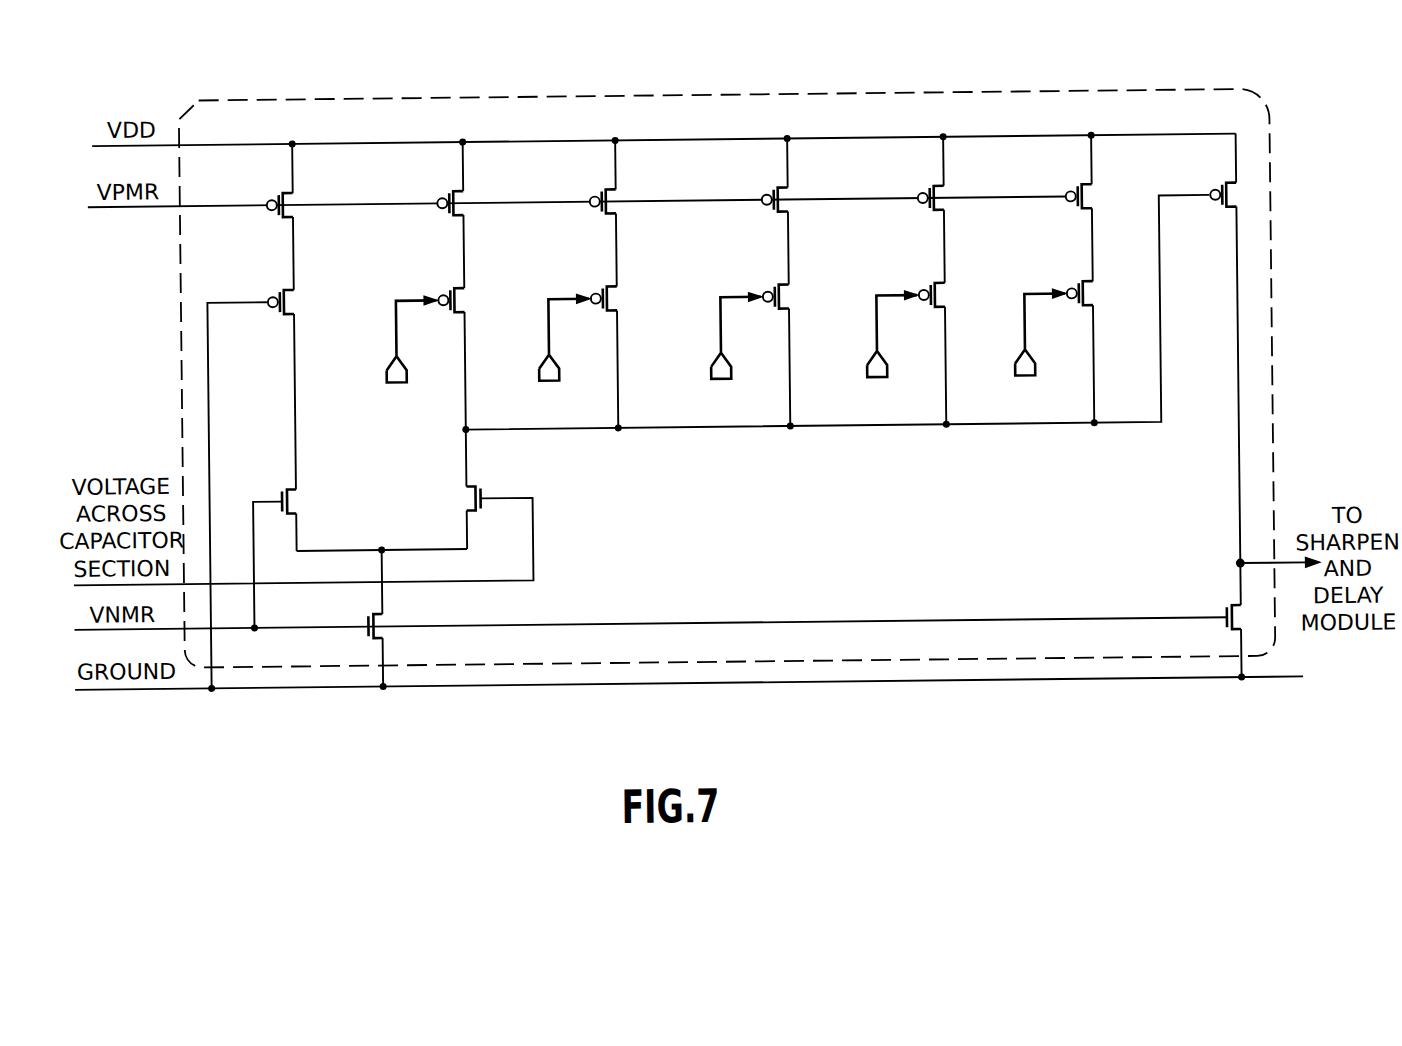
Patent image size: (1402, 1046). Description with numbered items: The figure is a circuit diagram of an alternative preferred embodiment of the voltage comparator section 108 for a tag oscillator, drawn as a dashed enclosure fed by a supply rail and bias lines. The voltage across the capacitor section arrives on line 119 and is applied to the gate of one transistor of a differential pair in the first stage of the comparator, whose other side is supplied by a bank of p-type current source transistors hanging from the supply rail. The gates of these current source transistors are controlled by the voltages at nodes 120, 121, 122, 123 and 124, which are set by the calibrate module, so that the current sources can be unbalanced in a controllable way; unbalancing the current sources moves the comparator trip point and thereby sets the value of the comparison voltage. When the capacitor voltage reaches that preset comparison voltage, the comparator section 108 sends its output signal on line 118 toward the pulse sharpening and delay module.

The voltage comparator section 108 is at (502, 95).
The line 118 is at (1238, 534).
The line 119 is at (533, 539).
The node 120 is at (1032, 382).
The node 121 is at (884, 382).
The node 122 is at (728, 382).
The node 123 is at (556, 382).
The node 124 is at (404, 382).